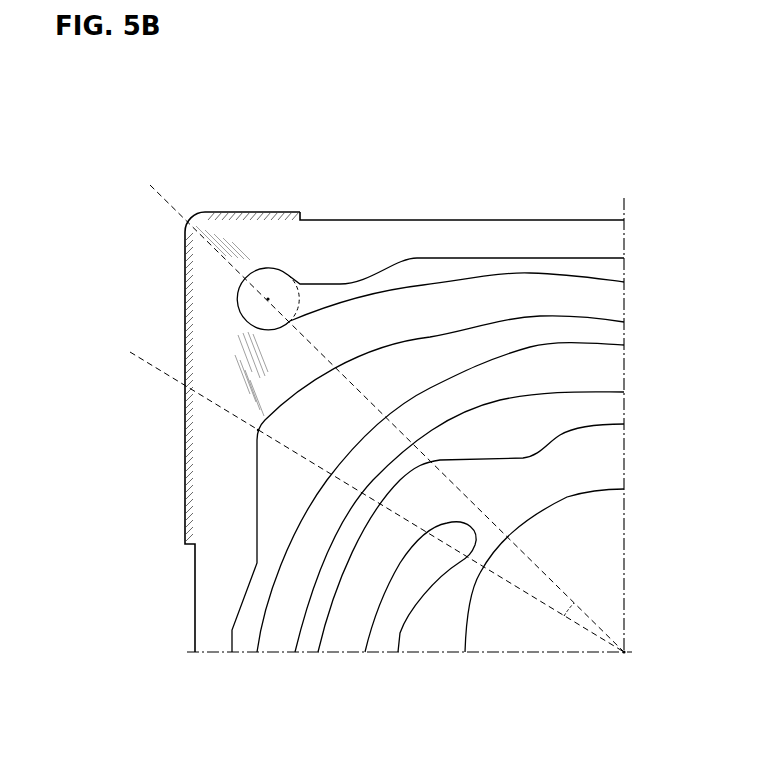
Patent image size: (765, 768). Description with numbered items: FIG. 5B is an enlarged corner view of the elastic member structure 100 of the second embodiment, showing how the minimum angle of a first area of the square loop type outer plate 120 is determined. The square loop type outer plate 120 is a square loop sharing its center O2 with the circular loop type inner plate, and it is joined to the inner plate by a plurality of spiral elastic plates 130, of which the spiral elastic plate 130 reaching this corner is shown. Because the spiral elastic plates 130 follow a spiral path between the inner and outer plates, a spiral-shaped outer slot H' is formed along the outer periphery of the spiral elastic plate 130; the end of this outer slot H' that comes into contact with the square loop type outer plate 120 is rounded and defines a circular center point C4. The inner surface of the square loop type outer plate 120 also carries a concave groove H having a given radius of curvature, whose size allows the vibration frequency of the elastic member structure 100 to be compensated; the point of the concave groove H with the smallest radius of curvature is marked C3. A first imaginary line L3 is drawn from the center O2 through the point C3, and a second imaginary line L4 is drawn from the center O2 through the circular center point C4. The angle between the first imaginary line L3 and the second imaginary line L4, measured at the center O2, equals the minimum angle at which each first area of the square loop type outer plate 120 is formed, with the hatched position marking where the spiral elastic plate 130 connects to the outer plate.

The elastic member structure 100 is at (381, 130).
The square loop type outer plate 120 is at (218, 297).
The spiral elastic plate 130 is at (423, 310).
The concave groove H is at (372, 484).
The spiral-shaped outer slot H' is at (456, 249).
The circular center point C4 is at (268, 299).
The smallest point in radius of curvature C3 is at (277, 430).
The second imaginary line L4 is at (371, 414).
The first imaginary line L3 is at (363, 497).
The center O2 is at (623, 666).